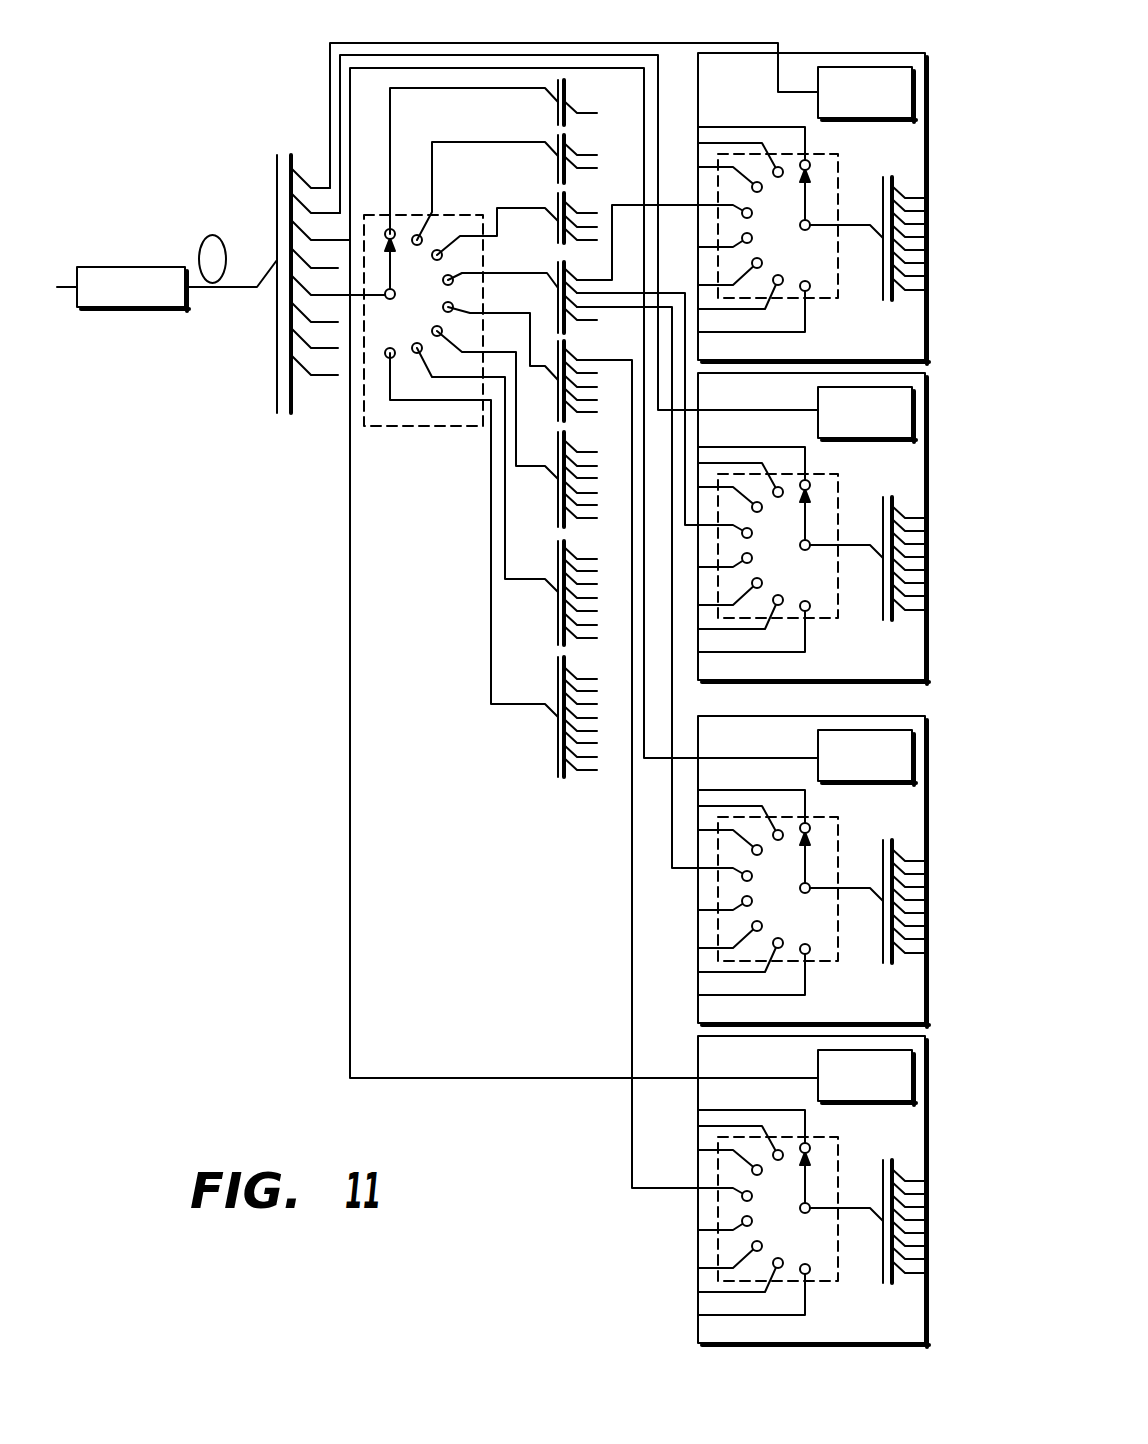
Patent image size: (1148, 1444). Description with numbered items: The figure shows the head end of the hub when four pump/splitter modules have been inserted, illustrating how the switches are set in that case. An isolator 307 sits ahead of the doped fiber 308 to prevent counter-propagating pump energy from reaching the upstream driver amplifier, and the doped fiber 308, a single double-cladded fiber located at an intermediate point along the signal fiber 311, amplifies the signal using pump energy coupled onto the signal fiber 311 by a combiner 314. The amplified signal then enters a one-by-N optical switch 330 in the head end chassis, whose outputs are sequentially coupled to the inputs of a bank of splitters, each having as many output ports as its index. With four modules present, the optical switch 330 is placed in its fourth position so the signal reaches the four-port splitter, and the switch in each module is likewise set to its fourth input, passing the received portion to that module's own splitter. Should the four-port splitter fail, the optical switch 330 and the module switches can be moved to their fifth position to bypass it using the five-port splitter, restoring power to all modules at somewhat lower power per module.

The isolator 307 is at (160, 310).
The doped fiber 308 is at (205, 240).
The signal fiber 311 is at (237, 288).
The combiner 314 is at (277, 200).
The optical switch 330 is at (420, 430).